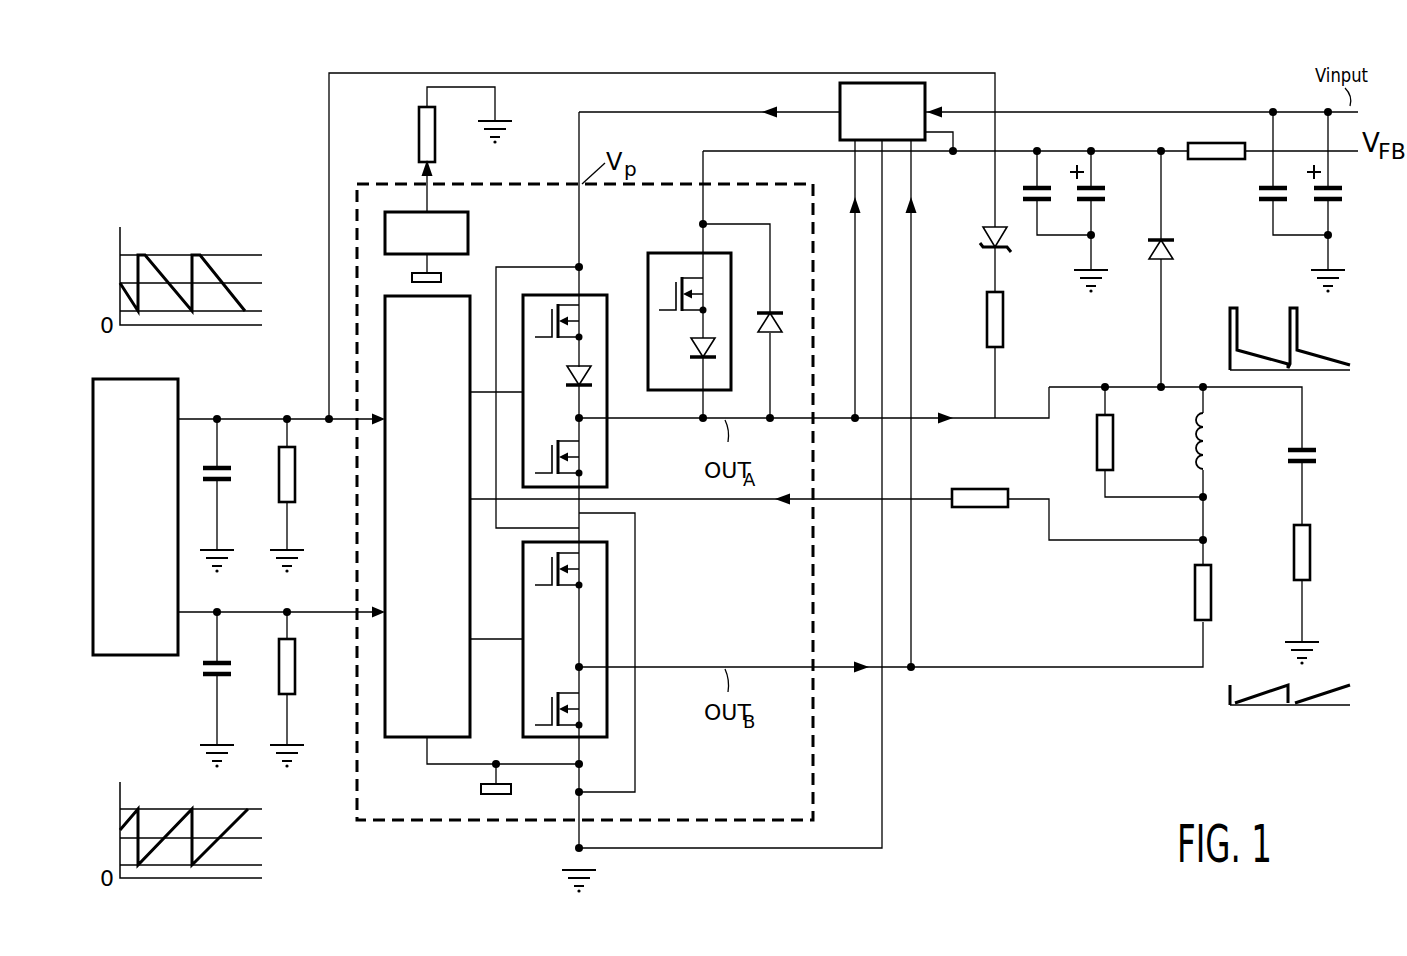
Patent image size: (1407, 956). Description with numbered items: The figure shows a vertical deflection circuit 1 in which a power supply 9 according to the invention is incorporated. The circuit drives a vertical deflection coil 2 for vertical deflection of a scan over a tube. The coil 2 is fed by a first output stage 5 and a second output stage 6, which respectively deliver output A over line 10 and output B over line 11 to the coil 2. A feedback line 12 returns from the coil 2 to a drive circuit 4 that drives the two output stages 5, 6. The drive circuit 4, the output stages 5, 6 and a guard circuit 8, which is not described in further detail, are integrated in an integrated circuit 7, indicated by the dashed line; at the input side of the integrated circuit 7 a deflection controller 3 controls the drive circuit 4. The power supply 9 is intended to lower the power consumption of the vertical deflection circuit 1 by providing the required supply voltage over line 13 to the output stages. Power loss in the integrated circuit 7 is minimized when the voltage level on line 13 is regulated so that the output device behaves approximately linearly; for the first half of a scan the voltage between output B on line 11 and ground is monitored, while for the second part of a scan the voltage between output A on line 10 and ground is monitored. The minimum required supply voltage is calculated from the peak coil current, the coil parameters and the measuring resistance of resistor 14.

The vertical deflection circuit 1 is at (249, 176).
The vertical deflection coil 2 is at (1214, 443).
The deflection controller 3 is at (135, 655).
The drive circuit 4 is at (382, 517).
The first output stage 5 is at (597, 445).
The second output stage 6 is at (597, 625).
The integrated circuit 7 is at (380, 812).
The guard circuit 8 is at (470, 233).
The power supply 9 is at (840, 128).
The line 10 is at (838, 420).
The line 11 is at (838, 669).
The feedback line 12 is at (723, 503).
The supply voltage line 13 is at (579, 147).
The resistor 14 is at (1194, 593).